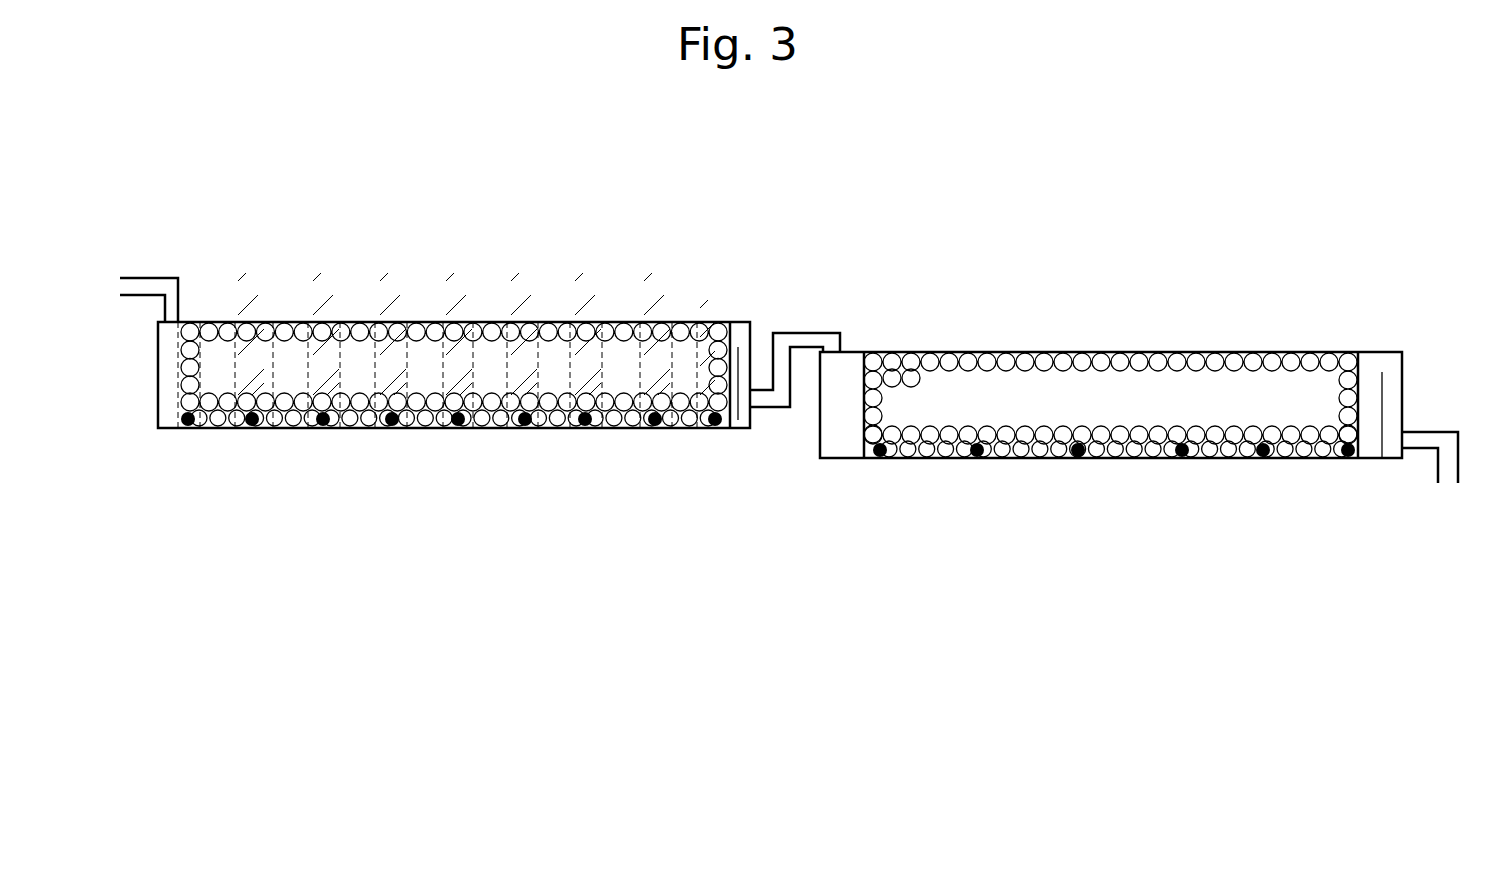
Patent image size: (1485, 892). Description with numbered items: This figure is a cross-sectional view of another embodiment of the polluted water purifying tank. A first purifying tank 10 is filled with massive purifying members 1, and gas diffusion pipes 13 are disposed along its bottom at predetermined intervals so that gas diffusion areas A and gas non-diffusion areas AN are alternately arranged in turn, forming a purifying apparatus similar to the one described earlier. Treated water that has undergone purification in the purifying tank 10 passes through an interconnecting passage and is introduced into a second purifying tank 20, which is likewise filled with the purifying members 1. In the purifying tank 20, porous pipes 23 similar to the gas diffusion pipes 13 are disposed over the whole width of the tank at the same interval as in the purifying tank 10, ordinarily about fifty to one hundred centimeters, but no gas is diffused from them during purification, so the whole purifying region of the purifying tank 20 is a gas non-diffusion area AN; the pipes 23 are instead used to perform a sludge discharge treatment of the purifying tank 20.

The purifying tank 10 is at (745, 306).
The purifying tank 20 is at (1305, 341).
The massive purifying members 1 is at (322, 322).
The gas non-diffusion area AN is at (282, 336).
The gas diffusion area A is at (332, 428).
The gas diffusion pipes 13 is at (580, 428).
The porous pipes 23 is at (977, 458).